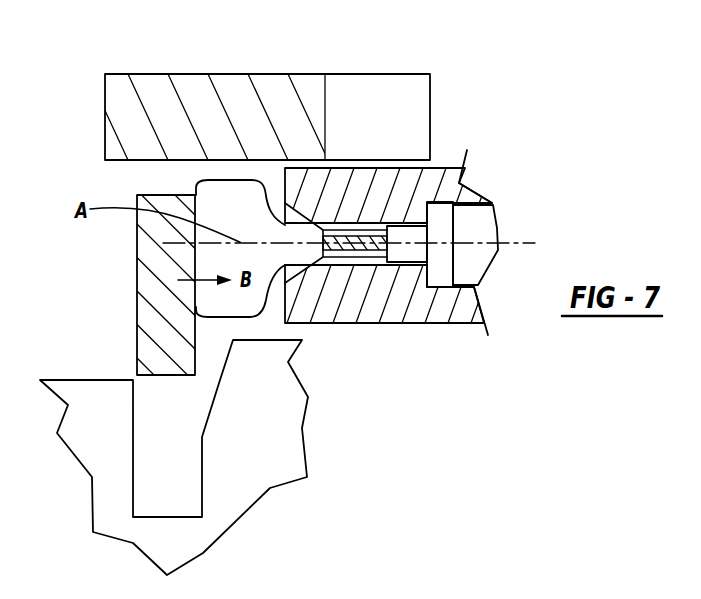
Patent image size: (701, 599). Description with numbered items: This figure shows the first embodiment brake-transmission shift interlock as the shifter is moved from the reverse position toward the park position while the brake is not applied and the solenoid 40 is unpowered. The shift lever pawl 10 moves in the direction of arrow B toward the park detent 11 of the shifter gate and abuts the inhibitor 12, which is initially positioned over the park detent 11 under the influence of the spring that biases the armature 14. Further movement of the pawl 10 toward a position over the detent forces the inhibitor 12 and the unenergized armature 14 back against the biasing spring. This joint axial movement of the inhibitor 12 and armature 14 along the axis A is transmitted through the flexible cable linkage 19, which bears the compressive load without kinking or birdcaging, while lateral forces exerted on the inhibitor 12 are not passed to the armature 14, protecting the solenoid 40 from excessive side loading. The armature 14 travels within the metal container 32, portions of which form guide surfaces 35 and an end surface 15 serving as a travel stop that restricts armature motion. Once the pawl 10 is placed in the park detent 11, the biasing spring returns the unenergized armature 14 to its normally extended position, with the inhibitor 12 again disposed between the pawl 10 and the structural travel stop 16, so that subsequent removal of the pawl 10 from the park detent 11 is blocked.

The pawl 10 is at (148, 345).
The park detent 11 is at (210, 478).
The inhibitor 12 is at (202, 305).
The armature 14 is at (483, 223).
The end surface 15 is at (429, 289).
The structural travel stop 16 is at (250, 90).
The flexible cable linkage 19 is at (338, 243).
The metal container 32 is at (463, 308).
The guide surfaces 35 is at (365, 222).
The solenoid 40 is at (450, 160).